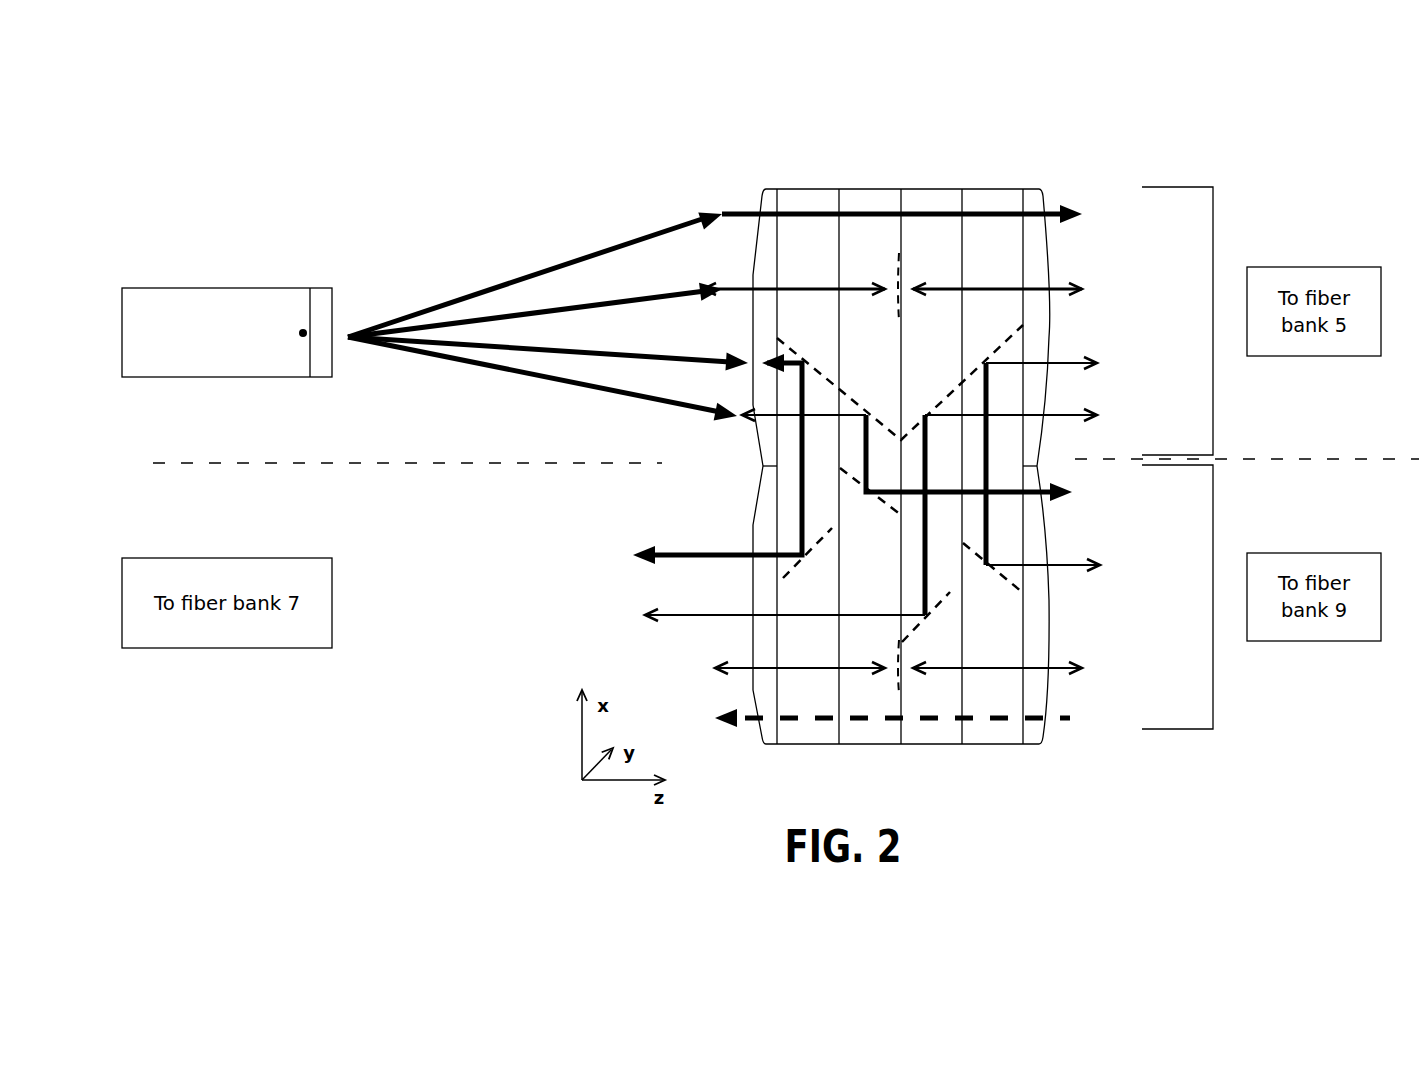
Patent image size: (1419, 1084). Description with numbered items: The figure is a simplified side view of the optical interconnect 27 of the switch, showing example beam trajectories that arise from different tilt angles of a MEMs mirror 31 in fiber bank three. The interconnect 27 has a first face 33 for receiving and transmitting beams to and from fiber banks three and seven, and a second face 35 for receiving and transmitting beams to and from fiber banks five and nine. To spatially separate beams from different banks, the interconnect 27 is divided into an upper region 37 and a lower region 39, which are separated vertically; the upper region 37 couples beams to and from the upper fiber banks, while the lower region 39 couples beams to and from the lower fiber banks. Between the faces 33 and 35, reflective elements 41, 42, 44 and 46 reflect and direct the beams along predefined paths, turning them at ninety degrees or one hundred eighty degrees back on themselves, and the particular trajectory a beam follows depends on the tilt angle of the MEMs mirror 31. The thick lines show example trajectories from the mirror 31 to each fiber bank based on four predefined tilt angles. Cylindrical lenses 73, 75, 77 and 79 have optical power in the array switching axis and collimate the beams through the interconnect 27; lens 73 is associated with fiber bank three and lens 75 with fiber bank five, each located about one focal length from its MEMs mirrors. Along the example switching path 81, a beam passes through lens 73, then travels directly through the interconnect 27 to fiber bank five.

The interconnect 27 is at (901, 189).
The MEMs mirror 31 is at (312, 288).
The first face 33 is at (777, 189).
The second face 35 is at (1023, 189).
The upper region 37 is at (1213, 205).
The lower region 39 is at (1213, 709).
The reflective element 41 is at (843, 392).
The reflective element 42 is at (895, 270).
The reflective element 44 is at (902, 515).
The reflective element 46 is at (790, 573).
The lens 73 is at (770, 255).
The lens 75 is at (1040, 272).
The lens 77 is at (765, 527).
The lens 79 is at (1040, 625).
The switching path 81 is at (585, 258).